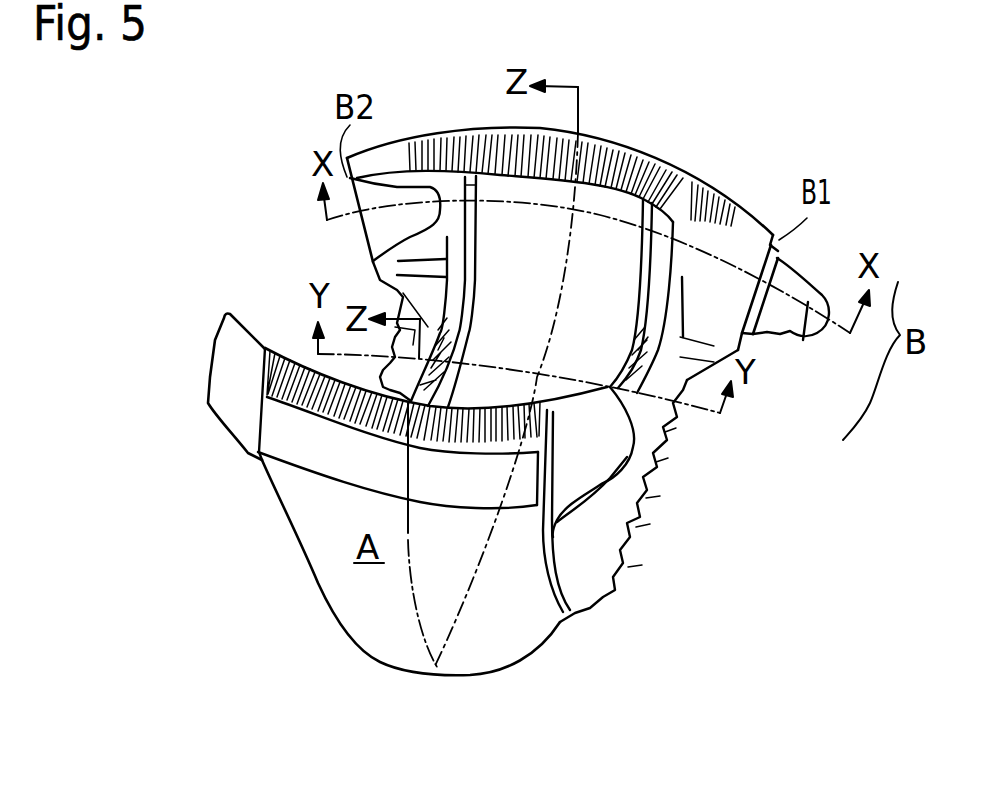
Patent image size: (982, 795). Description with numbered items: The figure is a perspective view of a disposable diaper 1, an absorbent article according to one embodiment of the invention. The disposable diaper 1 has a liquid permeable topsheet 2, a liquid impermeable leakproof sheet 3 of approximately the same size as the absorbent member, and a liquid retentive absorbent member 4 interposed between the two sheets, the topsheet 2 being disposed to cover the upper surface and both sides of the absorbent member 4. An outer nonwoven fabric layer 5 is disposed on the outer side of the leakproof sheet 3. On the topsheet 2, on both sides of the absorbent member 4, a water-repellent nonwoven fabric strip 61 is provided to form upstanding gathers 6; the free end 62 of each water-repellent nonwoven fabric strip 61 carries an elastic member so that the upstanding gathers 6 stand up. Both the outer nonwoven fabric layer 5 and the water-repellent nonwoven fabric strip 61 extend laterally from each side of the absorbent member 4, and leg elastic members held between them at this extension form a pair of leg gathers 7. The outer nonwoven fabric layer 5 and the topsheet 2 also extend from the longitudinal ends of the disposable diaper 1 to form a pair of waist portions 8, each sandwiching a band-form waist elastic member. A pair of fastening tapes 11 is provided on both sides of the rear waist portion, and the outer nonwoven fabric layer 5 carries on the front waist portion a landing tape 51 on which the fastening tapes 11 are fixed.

The disposable diaper 1 is at (776, 145).
The liquid permeable topsheet 2 is at (597, 237).
The liquid impermeable leakproof sheet 3 is at (492, 638).
The liquid retentive absorbent member 4 is at (674, 220).
The outer nonwoven fabric layer 5 is at (550, 613).
The upstanding gathers 6 is at (483, 277).
The leg gathers 7 is at (620, 512).
The waist portions 8 is at (640, 155).
The fastening tapes 11 is at (378, 230).
The landing tape 51 is at (300, 455).
The water-repellent nonwoven fabric strip 61 is at (480, 267).
The free end 62 is at (473, 307).